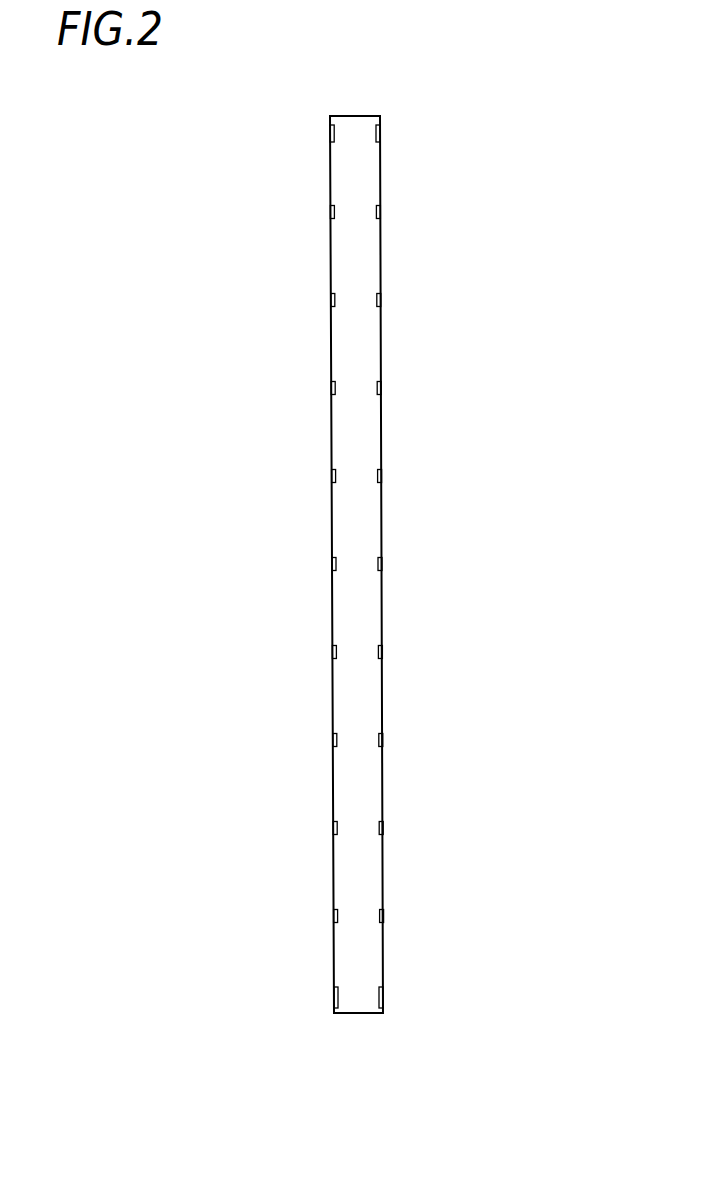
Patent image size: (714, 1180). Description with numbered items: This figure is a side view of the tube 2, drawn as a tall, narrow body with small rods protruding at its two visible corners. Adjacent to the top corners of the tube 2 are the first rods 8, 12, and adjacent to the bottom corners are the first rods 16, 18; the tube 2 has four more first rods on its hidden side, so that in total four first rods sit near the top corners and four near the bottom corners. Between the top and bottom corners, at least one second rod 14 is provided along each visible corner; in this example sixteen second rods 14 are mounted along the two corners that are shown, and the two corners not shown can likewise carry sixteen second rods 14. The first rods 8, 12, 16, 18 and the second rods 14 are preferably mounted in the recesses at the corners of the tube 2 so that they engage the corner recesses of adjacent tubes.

The tube 2 is at (470, 119).
The first rod 8 is at (330, 133).
The first rod 12 is at (381, 129).
The second rod 14 is at (330, 210).
The first rod 16 is at (335, 1002).
The first rod 18 is at (383, 992).